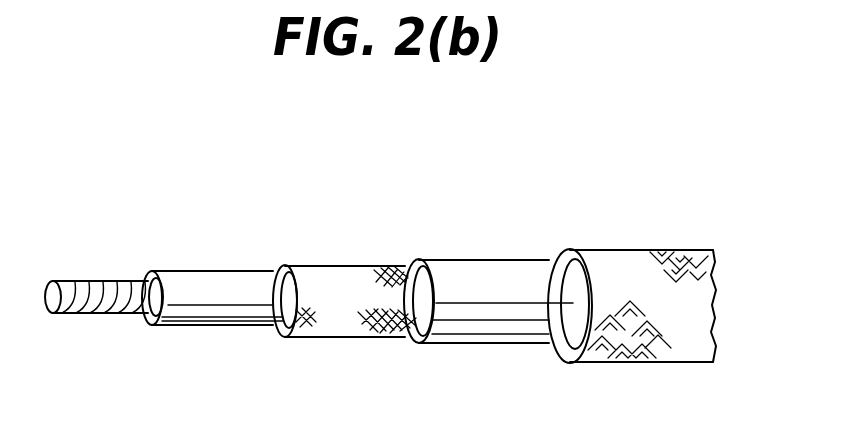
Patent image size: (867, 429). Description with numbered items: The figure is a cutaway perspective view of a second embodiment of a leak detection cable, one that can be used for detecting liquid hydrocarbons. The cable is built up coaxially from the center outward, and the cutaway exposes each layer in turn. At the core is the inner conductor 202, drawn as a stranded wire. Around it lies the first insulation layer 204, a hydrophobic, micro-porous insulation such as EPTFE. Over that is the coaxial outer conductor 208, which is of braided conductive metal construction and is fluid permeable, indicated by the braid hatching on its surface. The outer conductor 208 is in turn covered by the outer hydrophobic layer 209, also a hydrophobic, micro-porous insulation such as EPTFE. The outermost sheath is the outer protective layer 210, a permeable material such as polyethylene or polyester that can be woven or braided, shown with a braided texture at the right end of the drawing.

The inner conductor 202 is at (97, 287).
The first insulation layer 204 is at (205, 271).
The coaxial outer conductor 208 is at (344, 263).
The outer hydrophobic layer 209 is at (470, 259).
The outer protective layer 210 is at (617, 250).